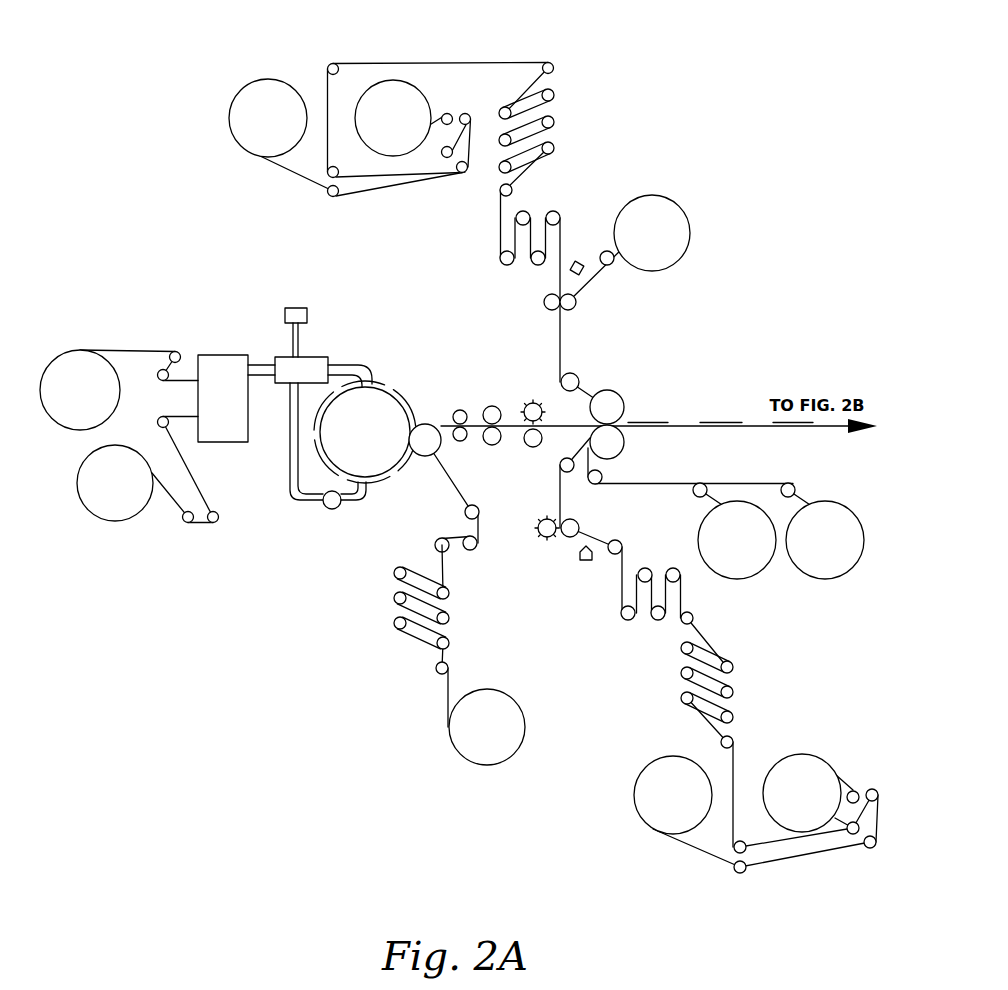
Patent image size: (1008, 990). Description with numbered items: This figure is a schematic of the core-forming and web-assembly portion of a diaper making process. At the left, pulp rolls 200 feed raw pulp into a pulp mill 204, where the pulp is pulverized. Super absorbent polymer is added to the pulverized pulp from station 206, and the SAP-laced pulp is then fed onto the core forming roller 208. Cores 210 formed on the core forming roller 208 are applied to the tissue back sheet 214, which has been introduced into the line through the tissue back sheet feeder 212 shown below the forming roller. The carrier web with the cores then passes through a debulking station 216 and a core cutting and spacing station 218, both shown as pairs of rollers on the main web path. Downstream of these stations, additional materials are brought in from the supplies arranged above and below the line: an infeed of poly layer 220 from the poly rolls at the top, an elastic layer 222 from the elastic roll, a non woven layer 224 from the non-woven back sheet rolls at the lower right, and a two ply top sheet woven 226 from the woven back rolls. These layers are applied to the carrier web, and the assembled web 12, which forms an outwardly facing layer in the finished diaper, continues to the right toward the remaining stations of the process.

The web 12 is at (717, 408).
The pulp rolls 200 is at (66, 423).
The pulp mill 204 is at (217, 368).
The station 206 is at (307, 316).
The core forming roller 208 is at (358, 398).
The cores 210 is at (396, 392).
The tissue back sheet feeder 212 is at (406, 646).
The tissue back sheet 214 is at (468, 489).
The debulking station 216 is at (491, 399).
The core cutting and spacing station 218 is at (525, 455).
The poly layer 220 is at (413, 62).
The elastic layer 222 is at (590, 282).
The non woven layer 224 is at (735, 762).
The two ply top sheet woven 226 is at (672, 482).